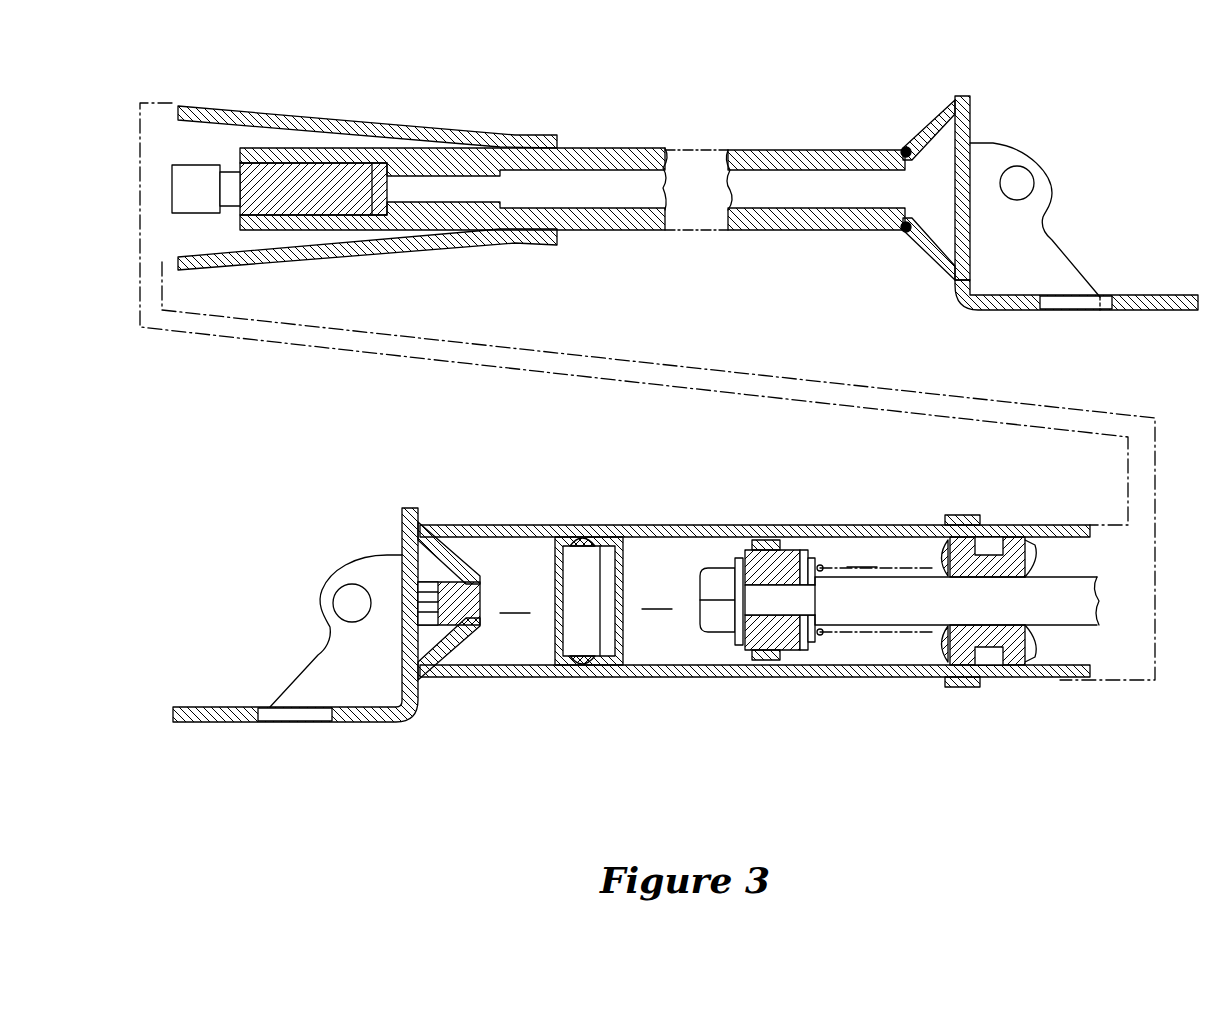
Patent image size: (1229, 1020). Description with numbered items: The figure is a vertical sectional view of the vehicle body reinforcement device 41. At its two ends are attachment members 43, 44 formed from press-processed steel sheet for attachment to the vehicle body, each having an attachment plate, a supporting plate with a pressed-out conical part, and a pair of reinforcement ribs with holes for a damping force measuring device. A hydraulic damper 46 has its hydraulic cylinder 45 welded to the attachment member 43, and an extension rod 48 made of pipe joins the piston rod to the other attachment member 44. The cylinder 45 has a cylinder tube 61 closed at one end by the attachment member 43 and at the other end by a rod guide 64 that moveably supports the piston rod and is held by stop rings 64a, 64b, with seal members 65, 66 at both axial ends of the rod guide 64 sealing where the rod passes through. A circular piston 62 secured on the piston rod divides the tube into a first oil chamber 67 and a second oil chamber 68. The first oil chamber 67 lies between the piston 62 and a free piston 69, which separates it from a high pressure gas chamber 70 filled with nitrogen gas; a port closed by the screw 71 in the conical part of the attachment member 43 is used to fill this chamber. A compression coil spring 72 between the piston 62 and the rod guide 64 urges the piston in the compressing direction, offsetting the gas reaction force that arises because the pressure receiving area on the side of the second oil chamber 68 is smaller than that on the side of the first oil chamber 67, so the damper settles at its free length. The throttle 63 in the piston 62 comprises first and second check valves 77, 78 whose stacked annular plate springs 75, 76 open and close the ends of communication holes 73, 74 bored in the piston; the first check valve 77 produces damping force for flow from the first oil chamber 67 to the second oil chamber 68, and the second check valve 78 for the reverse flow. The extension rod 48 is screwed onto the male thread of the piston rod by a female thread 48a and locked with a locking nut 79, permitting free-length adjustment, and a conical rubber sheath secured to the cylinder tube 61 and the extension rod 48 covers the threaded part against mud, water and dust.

The longitudinally extending vehicle body reinforcement device 41 is at (553, 110).
The attachment member 43 is at (173, 722).
The attachment member 44 is at (1175, 312).
The hydraulic cylinder 45 is at (528, 678).
The hydraulic damper 46 is at (660, 677).
The extension rod 48 is at (772, 232).
The female thread 48a is at (337, 222).
The cylinder tube 61 is at (712, 650).
The piston 62 is at (775, 660).
The throttle 63 is at (808, 550).
The rod guide 64 is at (990, 557).
The stop ring 64a is at (950, 688).
The stop ring 64b is at (985, 688).
The seal member 65 is at (943, 538).
The seal member 66 is at (1030, 578).
The first oil chamber 67 is at (657, 594).
The second oil chamber 68 is at (862, 552).
The free piston 69 is at (608, 660).
The high pressure gas chamber 70 is at (515, 598).
The screw 71 is at (462, 582).
The compression coil spring 72 is at (912, 670).
The communication hole 73 is at (740, 650).
The communication hole 74 is at (797, 553).
The plate spring 75 is at (803, 652).
The plate spring 76 is at (790, 545).
The first check valve 77 is at (816, 652).
The second check valve 78 is at (745, 550).
The locking nut 79 is at (262, 222).